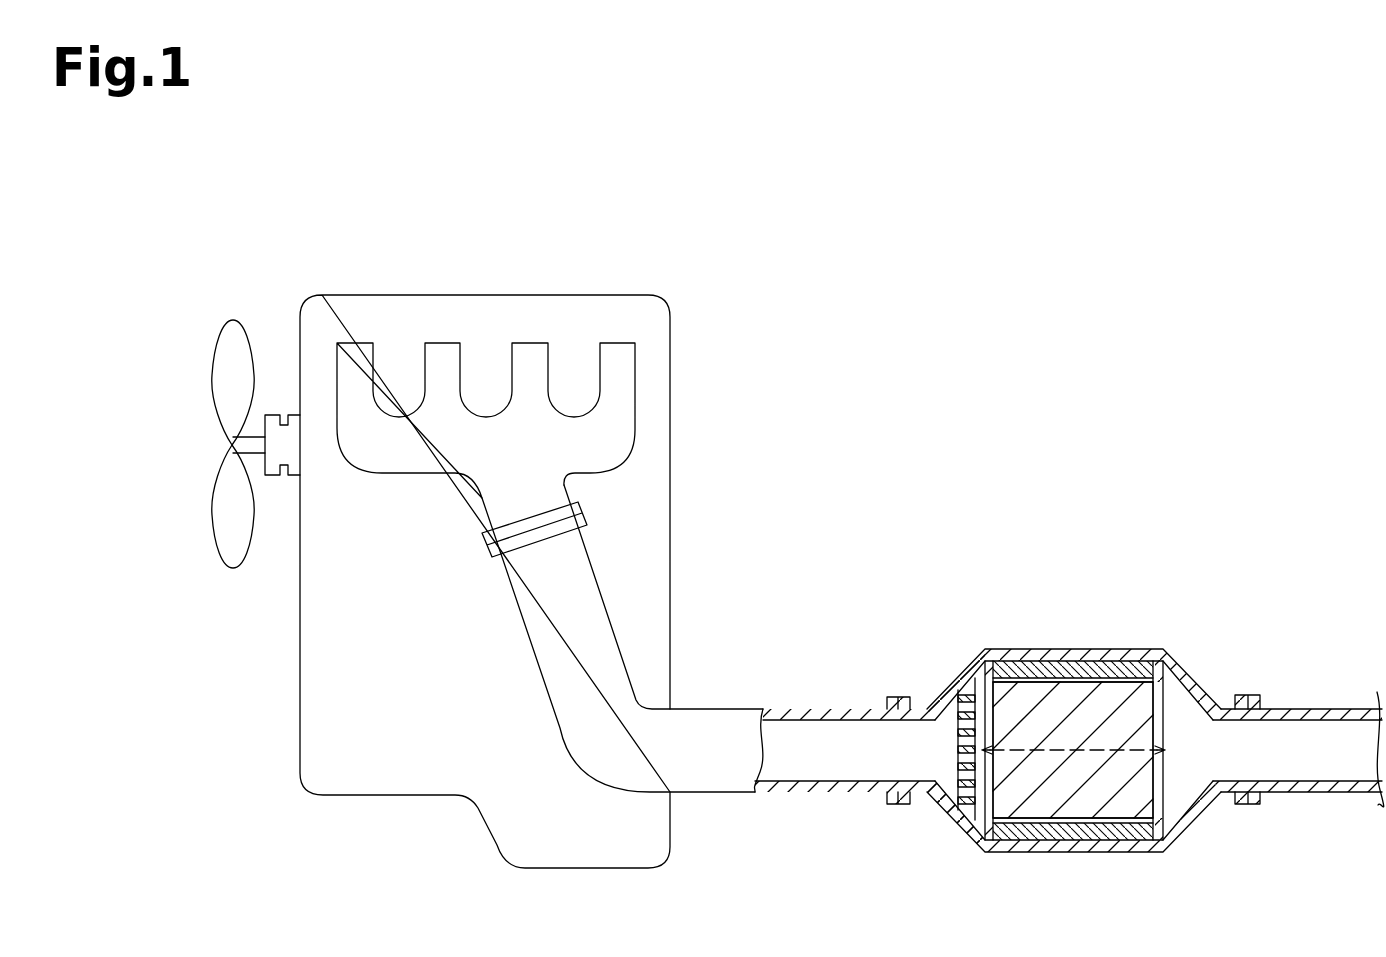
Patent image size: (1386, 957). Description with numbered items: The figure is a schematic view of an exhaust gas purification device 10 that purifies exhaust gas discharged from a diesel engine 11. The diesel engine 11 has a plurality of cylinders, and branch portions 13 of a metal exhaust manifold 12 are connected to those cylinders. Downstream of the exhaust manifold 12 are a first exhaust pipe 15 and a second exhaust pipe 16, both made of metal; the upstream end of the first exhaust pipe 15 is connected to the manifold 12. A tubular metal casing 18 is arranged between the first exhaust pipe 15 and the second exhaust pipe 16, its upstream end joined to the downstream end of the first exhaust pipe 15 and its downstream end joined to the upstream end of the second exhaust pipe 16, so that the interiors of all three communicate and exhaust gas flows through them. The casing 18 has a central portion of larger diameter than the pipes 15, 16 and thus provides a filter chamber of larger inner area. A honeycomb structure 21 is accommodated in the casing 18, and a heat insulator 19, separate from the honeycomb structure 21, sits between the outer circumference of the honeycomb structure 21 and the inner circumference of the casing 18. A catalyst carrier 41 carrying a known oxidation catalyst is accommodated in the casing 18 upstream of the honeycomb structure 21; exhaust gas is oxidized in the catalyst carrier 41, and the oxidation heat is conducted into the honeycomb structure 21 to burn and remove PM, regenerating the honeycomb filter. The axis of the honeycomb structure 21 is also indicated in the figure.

The exhaust gas purification device 10 is at (761, 262).
The diesel engine 11 is at (300, 676).
The exhaust manifold 12 is at (638, 405).
The branch portions 13 is at (622, 355).
The first exhaust pipe 15 is at (588, 768).
The second exhaust pipe 16 is at (1327, 794).
The tubular casing 18 is at (1125, 649).
The heat insulator 19 is at (1075, 661).
The honeycomb structure 21 is at (1155, 780).
The catalyst carrier 41 is at (957, 748).